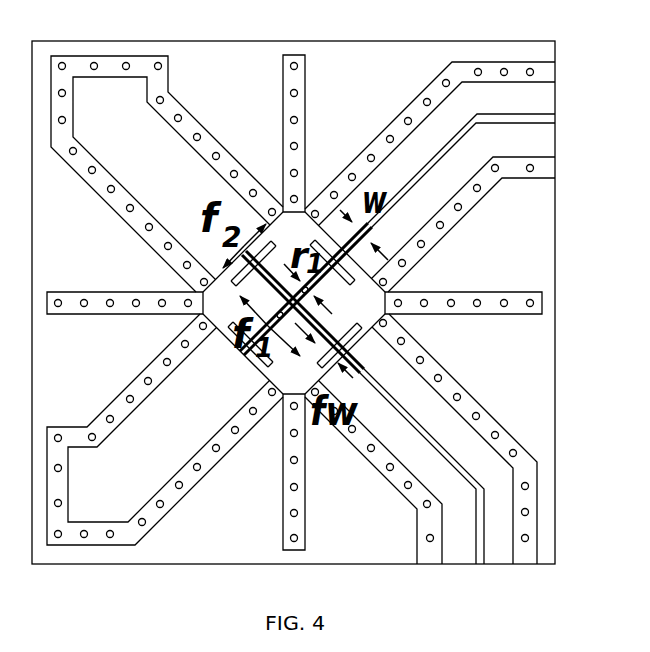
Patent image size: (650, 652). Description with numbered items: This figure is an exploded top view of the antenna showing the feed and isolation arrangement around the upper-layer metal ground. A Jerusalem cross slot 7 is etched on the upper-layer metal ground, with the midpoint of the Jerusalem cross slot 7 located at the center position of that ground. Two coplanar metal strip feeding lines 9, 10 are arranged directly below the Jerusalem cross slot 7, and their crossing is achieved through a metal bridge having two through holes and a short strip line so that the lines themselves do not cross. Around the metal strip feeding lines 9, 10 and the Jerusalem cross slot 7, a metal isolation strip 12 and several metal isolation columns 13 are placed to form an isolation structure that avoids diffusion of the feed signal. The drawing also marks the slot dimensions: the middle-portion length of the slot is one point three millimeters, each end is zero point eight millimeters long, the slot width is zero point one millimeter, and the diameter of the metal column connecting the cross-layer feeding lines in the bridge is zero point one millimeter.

The Jerusalem cross slot 7 is at (267, 370).
The metal strip feeding line 9 is at (427, 445).
The metal strip feeding line 10 is at (432, 165).
The metal isolation strip 12 is at (103, 176).
The metal isolation column 13 is at (133, 299).